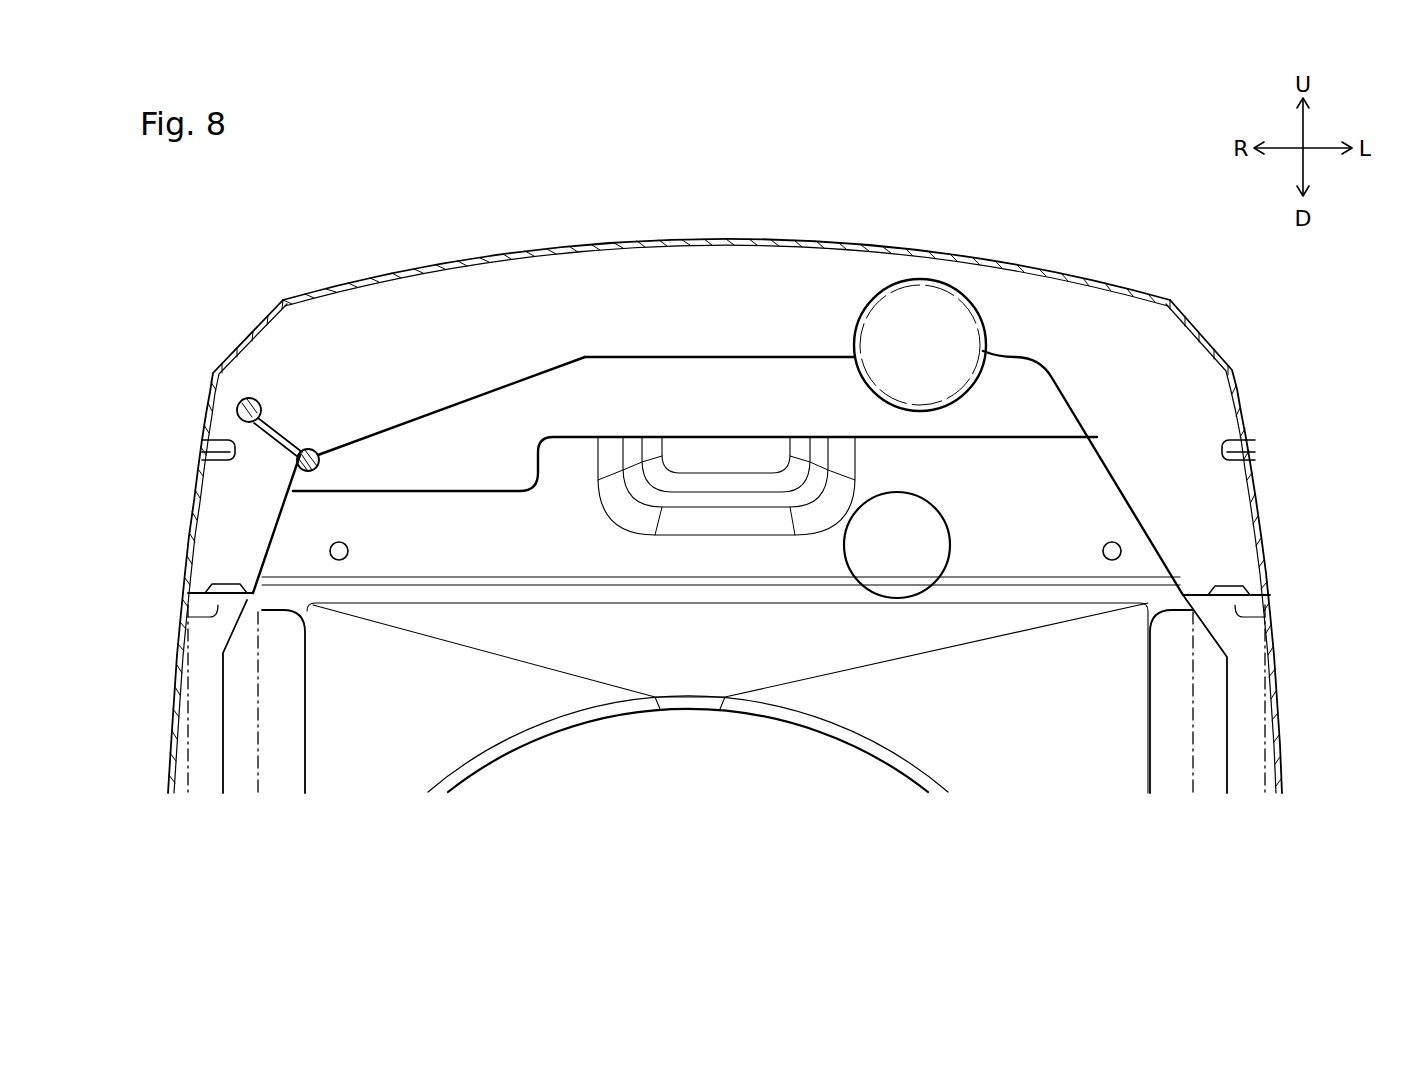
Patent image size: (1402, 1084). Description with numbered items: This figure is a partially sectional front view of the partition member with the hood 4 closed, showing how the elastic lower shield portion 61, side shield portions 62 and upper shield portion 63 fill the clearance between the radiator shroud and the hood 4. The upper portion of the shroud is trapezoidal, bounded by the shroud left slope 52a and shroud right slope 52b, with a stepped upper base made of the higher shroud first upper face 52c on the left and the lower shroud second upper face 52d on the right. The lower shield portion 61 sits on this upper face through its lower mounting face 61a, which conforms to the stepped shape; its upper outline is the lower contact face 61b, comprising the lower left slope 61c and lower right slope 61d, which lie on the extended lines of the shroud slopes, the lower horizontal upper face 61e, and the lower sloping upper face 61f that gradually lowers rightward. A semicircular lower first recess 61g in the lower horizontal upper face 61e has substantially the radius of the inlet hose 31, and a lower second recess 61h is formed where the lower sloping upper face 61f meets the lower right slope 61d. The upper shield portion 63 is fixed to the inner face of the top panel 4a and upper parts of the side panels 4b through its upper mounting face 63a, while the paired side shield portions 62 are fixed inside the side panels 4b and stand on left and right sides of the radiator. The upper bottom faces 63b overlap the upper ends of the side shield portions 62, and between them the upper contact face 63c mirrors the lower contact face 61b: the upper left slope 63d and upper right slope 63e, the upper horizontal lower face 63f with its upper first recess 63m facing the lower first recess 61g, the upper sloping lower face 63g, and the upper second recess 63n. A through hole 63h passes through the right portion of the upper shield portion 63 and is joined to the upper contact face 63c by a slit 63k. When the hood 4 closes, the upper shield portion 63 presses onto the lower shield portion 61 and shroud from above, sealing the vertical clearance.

The hood 4 is at (729, 481).
The top panel 4a is at (845, 241).
The side panels 4b is at (180, 673).
The inlet hose 31 is at (988, 322).
The shroud left slope 52a is at (1158, 547).
The shroud right slope 52b is at (263, 567).
The shroud first upper face 52c is at (1020, 425).
The shroud second upper face 52d is at (435, 489).
The lower shield portion 61 is at (724, 382).
The lower mounting face 61a is at (563, 440).
The lower contact face 61b is at (615, 352).
The lower left slope 61c is at (1078, 405).
The lower right slope 61d is at (300, 464).
The lower horizontal upper face 61e is at (798, 355).
The lower sloping upper face 61f is at (492, 400).
The lower first recess 61g is at (938, 408).
The lower second recess 61h is at (233, 443).
The side shield portions 62 is at (197, 747).
The upper shield portion 63 is at (750, 382).
The upper mounting face 63a is at (537, 250).
The upper bottom faces 63b is at (218, 617).
The upper contact face 63c is at (763, 364).
The upper left slope 63d is at (1135, 520).
The upper right slope 63e is at (293, 525).
The upper horizontal lower face 63f is at (659, 370).
The upper sloping lower face 63g is at (433, 413).
The through hole 63h is at (247, 397).
The slit 63k is at (263, 452).
The upper first recess 63m is at (954, 292).
The upper second recess 63n is at (328, 458).